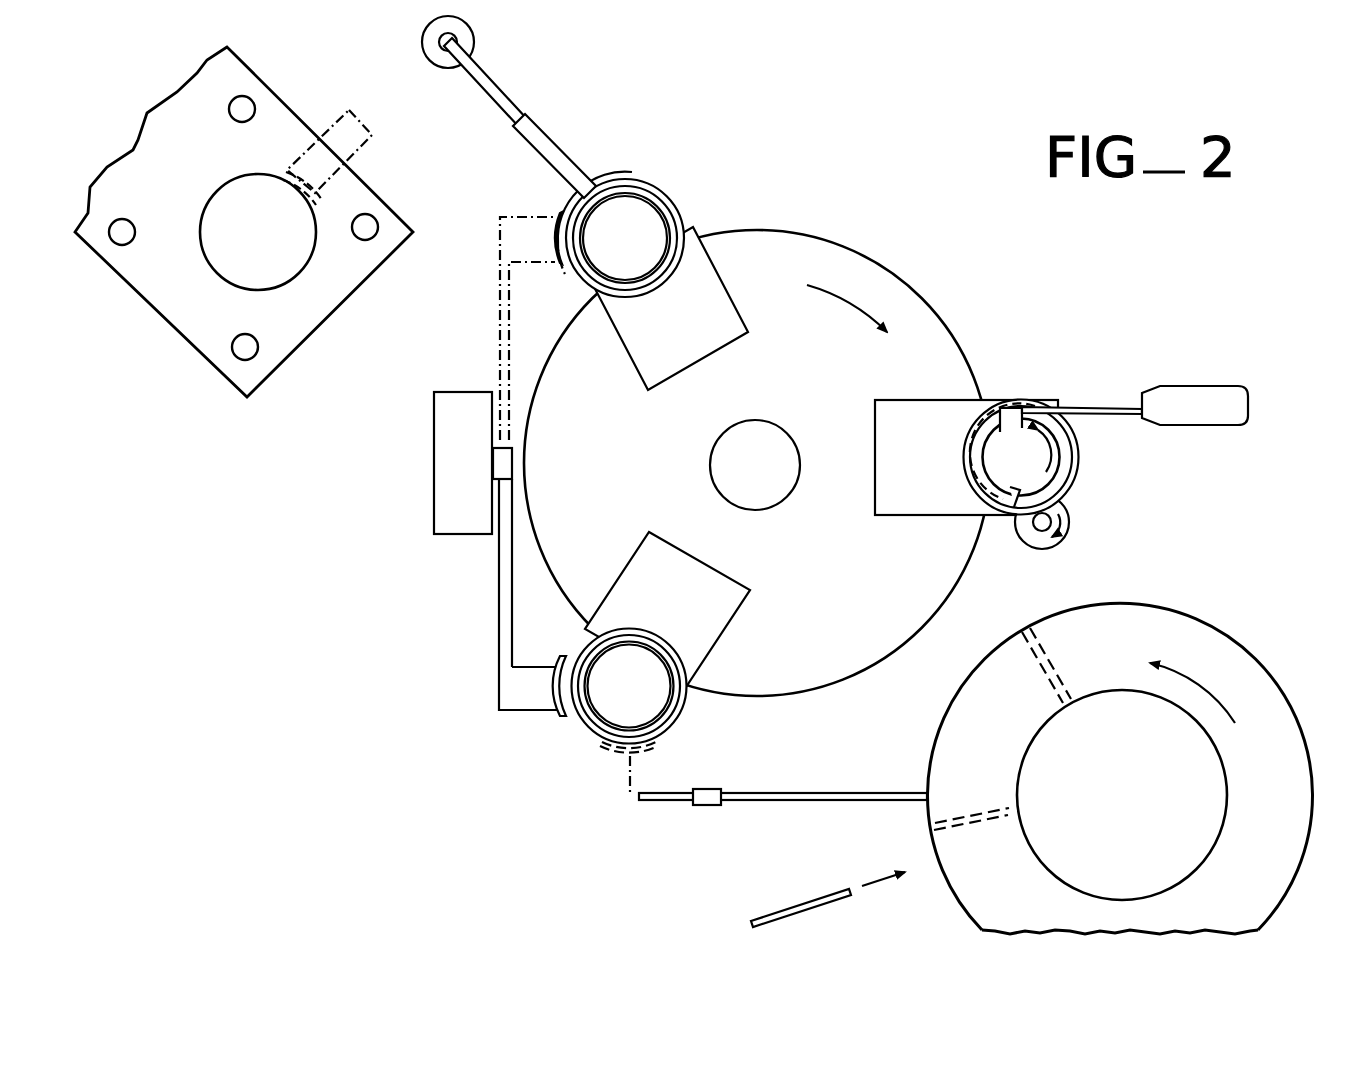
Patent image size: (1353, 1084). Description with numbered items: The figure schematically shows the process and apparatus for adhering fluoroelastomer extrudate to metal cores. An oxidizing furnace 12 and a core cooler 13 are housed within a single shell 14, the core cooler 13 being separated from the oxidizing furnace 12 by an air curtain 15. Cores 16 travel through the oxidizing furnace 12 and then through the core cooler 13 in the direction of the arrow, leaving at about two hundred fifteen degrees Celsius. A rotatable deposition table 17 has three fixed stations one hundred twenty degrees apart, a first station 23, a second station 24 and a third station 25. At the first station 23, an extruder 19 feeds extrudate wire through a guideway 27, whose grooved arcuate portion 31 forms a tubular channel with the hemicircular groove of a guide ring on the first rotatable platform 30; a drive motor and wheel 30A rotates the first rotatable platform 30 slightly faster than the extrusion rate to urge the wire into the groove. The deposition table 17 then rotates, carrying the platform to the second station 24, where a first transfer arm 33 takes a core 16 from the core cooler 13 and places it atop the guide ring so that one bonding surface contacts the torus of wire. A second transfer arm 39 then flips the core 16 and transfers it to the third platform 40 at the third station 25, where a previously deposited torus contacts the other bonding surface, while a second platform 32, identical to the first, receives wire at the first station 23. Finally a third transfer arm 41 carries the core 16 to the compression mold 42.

The oxidizing furnace 12 is at (1254, 786).
The core cooler 13 is at (959, 746).
The shell 14 is at (1275, 680).
The air curtain 15 is at (1047, 652).
The core 16 is at (768, 920).
The deposition table 17 is at (773, 694).
The extruder 19 is at (1237, 382).
The first station 23 is at (1095, 385).
The second station 24 is at (684, 724).
The third station 25 is at (713, 188).
The guideway 27 is at (1118, 406).
The first rotatable platform 30 is at (1003, 472).
The drive motor and wheel 30A is at (1078, 517).
The arcuate portion 31 is at (998, 426).
The second platform 32 is at (606, 254).
The first transfer arm 33 is at (853, 792).
The second transfer arm 39 is at (497, 612).
The third platform 40 is at (610, 702).
The third transfer arm 41 is at (503, 88).
The compression mold 42 is at (318, 327).